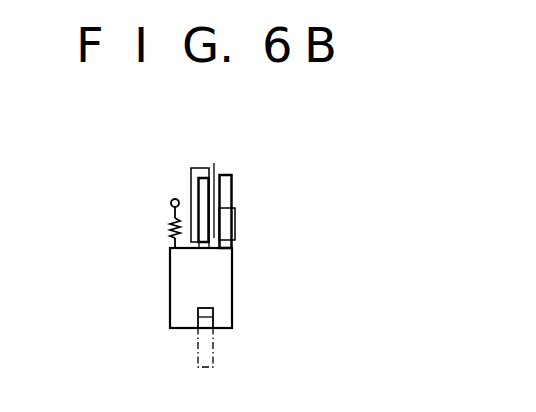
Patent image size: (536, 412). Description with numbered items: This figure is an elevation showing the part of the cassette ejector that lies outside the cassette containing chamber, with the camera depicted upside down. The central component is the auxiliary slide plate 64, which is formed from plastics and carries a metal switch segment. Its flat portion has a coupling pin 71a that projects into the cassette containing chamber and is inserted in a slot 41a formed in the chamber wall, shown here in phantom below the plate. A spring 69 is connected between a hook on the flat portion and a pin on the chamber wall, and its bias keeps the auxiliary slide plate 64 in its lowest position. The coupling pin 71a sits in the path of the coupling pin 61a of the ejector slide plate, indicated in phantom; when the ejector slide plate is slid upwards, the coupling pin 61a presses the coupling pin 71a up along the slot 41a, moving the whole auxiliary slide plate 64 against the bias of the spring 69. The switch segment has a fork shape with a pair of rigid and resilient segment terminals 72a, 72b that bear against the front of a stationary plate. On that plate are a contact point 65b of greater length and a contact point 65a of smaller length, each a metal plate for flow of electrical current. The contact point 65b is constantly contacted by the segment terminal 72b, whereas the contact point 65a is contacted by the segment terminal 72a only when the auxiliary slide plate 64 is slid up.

The auxiliary slide plate 64 is at (164, 335).
The coupling pin 71a is at (212, 315).
The slot 41a is at (213, 352).
The contact point 65b is at (196, 168).
The segment terminal 72b is at (200, 213).
The coupling pin 61a is at (216, 168).
The segment terminal 72a is at (232, 186).
The contact point 65a is at (234, 218).
The spring 69 is at (172, 226).